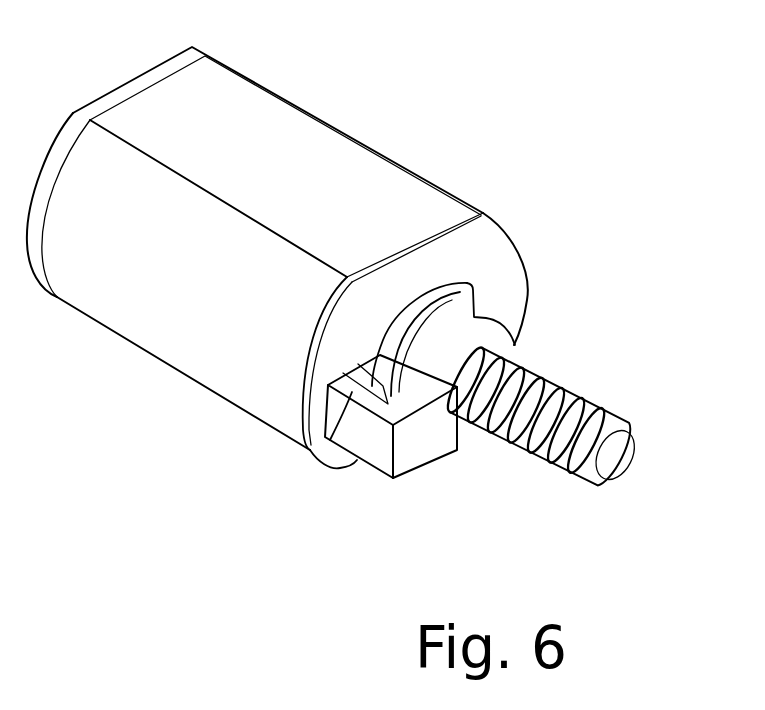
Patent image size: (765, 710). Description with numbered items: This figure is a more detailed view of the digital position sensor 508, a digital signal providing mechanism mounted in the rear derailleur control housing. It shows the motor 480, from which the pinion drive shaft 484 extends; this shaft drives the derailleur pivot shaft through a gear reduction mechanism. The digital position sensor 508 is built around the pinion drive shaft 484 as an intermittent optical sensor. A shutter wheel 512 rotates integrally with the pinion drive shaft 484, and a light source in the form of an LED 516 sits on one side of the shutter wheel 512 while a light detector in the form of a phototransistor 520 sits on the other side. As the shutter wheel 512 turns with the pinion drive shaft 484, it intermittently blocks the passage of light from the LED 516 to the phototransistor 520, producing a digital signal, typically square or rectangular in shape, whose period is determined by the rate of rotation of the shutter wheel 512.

The motor 480 is at (283, 123).
The shutter wheel 512 is at (460, 327).
The pinion drive shaft 484 is at (607, 413).
The LED 516 is at (417, 443).
The phototransistor 520 is at (317, 452).
The digital position sensor 508 is at (382, 298).